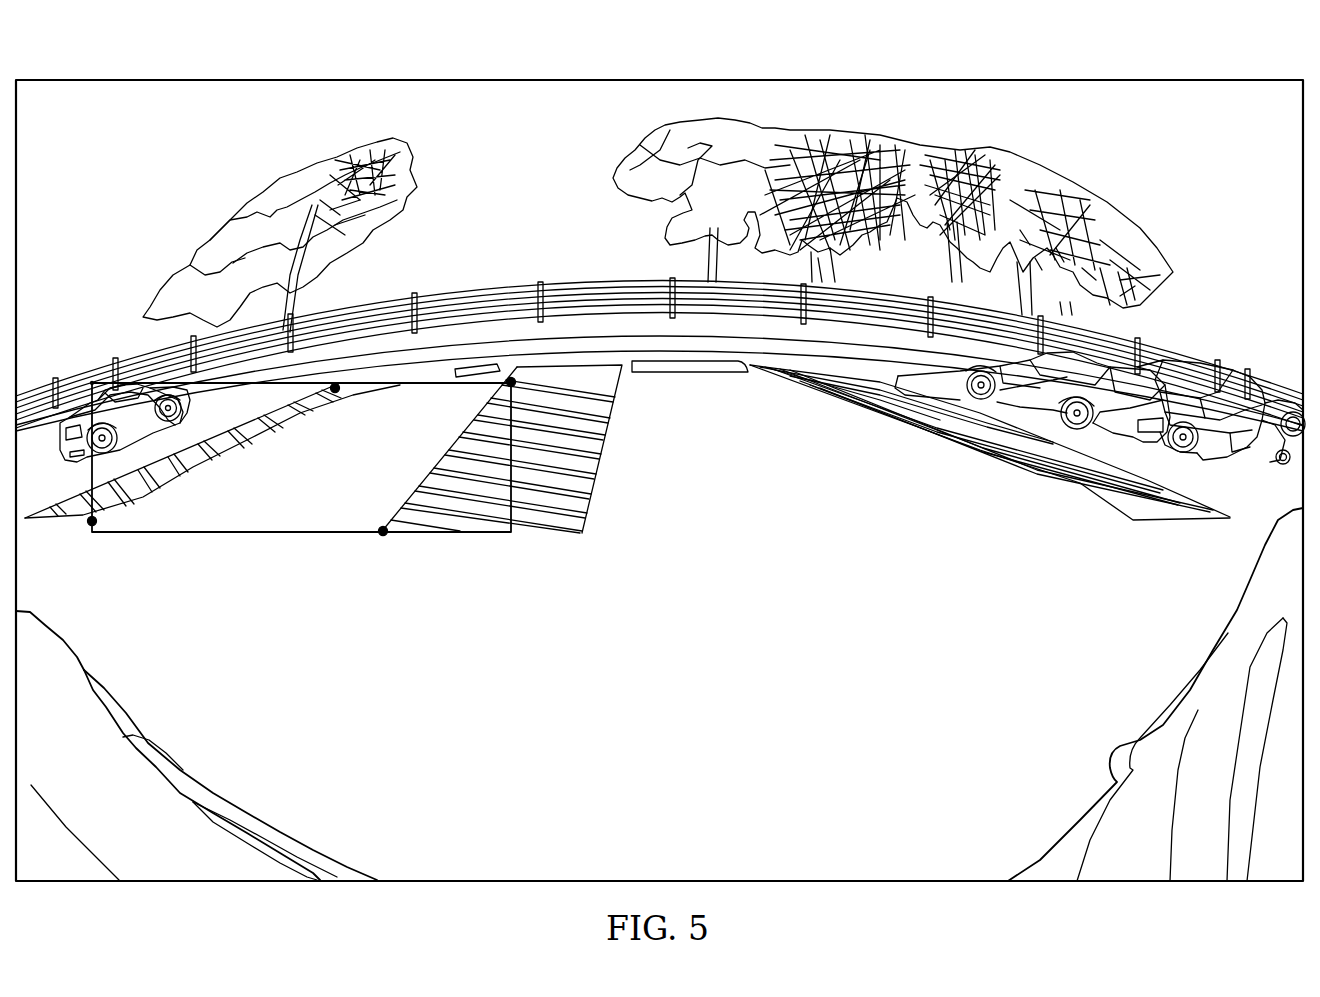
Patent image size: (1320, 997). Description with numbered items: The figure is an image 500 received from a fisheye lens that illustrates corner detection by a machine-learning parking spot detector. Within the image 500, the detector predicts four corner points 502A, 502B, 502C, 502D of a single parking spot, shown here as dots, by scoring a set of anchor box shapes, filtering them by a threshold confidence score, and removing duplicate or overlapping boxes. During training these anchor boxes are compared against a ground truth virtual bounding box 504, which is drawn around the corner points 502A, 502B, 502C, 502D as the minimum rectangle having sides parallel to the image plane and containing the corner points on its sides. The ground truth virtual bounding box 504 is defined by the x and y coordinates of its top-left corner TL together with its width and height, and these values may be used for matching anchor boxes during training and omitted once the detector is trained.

The image 500 is at (346, 78).
The top-left corner TL is at (92, 382).
The corner point 502A is at (88, 530).
The corner point 502B is at (385, 536).
The corner point 502C is at (510, 379).
The corner point 502D is at (333, 394).
The ground truth virtual bounding box 504 is at (252, 533).